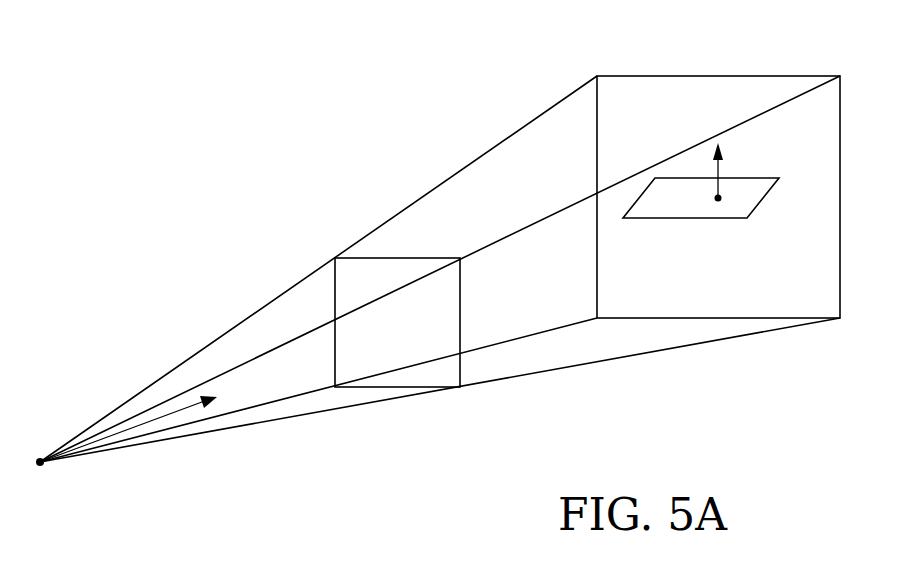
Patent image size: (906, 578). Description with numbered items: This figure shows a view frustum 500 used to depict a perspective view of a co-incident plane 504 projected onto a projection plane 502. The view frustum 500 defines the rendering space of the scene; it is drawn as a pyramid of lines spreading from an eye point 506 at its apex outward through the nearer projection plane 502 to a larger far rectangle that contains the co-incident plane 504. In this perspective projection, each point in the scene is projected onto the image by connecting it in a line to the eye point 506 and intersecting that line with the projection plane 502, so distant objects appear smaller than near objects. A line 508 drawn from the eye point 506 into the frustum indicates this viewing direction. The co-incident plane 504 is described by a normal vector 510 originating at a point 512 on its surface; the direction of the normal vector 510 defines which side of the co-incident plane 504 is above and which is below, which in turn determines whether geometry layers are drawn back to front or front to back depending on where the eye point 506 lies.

The view frustum 500 is at (233, 102).
The projection plane 502 is at (373, 268).
The co-incident plane 504 is at (752, 198).
The eye point 506 is at (43, 466).
The viewing direction 508 is at (182, 408).
The normal vector 510 is at (720, 149).
The point 512 is at (720, 202).